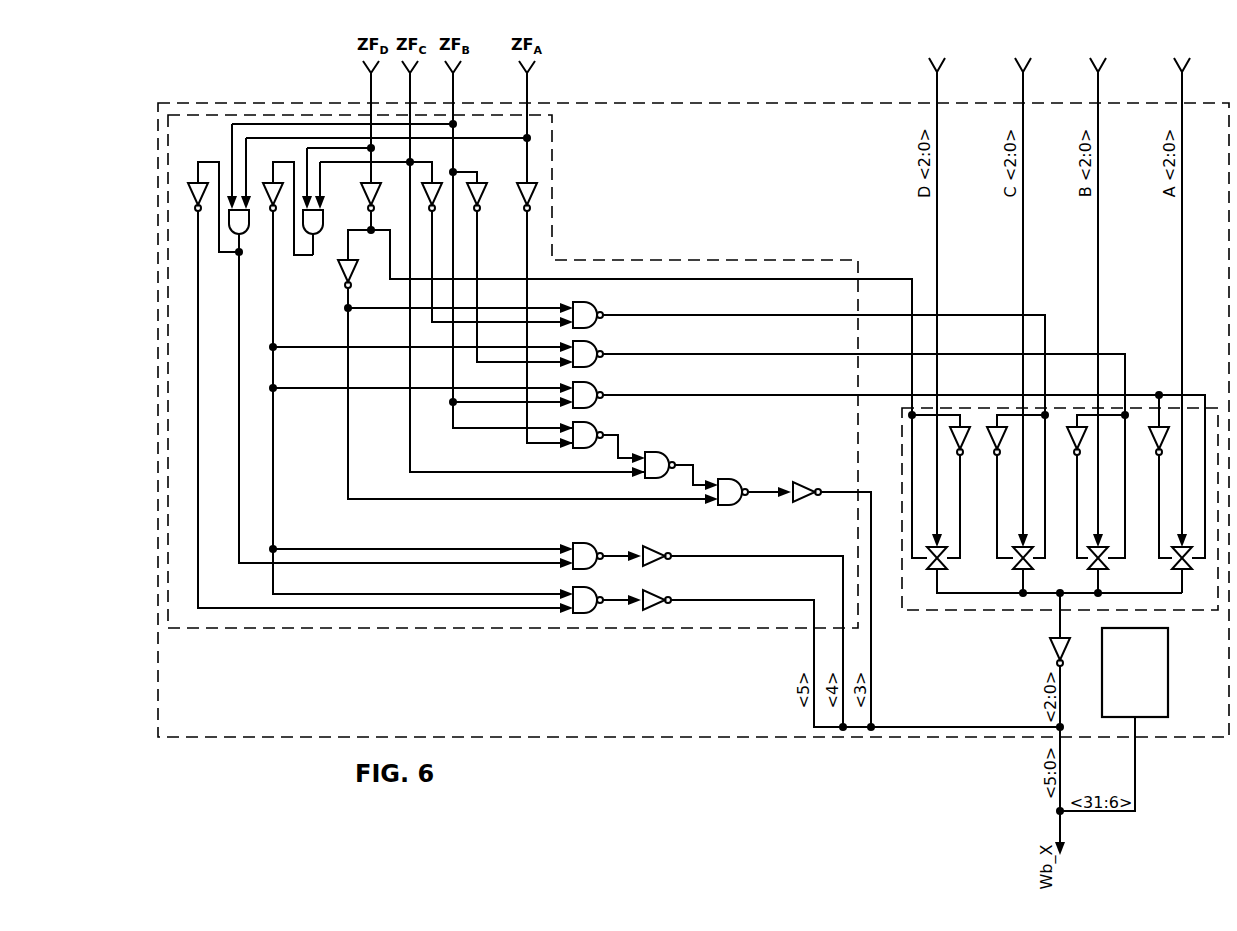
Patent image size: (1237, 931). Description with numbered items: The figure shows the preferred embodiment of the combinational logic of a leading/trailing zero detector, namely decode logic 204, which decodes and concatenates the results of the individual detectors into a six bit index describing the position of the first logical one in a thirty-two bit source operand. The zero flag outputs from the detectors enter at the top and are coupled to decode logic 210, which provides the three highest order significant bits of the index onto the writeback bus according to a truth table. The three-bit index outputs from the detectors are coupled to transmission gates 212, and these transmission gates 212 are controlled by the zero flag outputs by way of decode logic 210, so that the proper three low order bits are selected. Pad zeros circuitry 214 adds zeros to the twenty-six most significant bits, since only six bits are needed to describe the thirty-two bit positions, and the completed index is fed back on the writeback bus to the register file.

The decode logic 204 is at (683, 72).
The decode logic 210 is at (688, 232).
The transmission gates 212 is at (965, 610).
The pad zeros circuitry 214 is at (1135, 672).